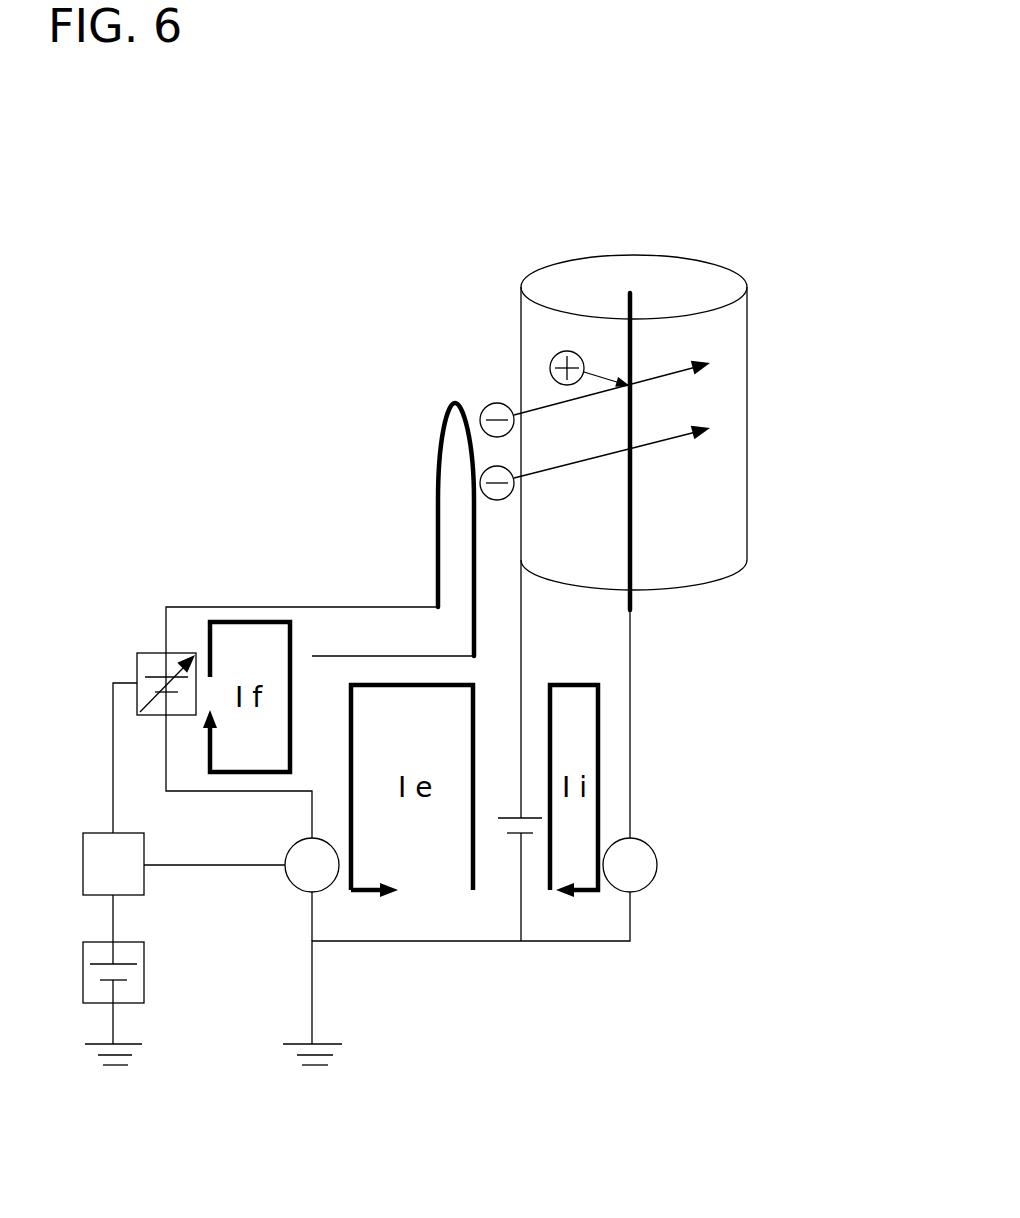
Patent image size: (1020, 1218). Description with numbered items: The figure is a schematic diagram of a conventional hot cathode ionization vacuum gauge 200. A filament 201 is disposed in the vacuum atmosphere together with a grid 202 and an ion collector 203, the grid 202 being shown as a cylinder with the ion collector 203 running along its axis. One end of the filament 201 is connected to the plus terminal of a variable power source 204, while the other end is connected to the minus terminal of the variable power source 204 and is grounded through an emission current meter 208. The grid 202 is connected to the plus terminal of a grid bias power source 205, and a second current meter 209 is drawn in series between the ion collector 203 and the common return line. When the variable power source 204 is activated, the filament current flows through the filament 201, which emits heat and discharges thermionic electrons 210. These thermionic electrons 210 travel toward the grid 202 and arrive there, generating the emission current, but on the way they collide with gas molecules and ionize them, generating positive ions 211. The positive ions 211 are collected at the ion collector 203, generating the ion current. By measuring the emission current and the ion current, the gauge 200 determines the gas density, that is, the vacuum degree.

The hot cathode ionization vacuum gauge 200 is at (677, 207).
The filament 201 is at (438, 482).
The grid 202 is at (575, 258).
The ion collector 203 is at (633, 505).
The variable power source 204 is at (160, 650).
The grid bias power source 205 is at (515, 837).
The emission current meter 208 is at (293, 888).
The ion current ammeter 209 is at (653, 847).
The thermionic electrons 210 is at (485, 405).
The positive ions 211 is at (550, 358).